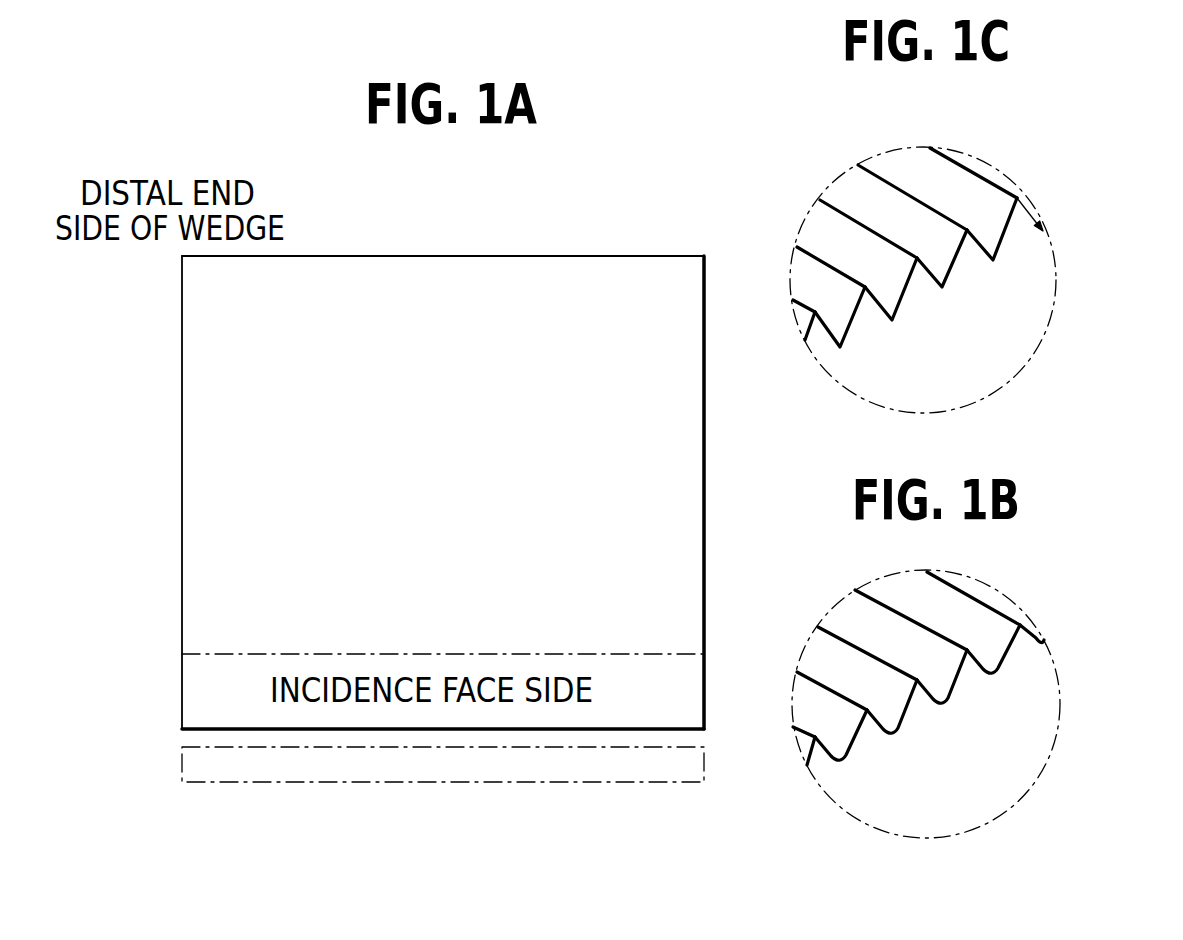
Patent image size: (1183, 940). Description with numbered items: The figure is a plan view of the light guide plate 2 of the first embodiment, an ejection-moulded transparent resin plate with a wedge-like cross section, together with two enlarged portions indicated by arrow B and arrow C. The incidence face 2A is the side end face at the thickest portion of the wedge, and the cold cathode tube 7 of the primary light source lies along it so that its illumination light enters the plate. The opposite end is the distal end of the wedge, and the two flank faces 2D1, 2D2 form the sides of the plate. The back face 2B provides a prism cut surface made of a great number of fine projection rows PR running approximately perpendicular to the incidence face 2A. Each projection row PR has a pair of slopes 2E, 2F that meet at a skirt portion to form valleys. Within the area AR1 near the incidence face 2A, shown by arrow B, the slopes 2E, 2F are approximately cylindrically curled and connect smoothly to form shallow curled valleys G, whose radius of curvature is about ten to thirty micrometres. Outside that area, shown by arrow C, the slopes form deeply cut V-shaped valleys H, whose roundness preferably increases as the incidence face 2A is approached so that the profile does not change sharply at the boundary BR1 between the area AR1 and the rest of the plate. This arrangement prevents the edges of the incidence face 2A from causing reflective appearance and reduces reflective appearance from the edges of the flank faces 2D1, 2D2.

In FIG. 1A, the light guide plate 2 is at (439, 496).
In FIG. 1A, the incidence face 2A is at (184, 729).
In FIG. 1A, the back face 2B is at (403, 287).
In FIG. 1A, the flank face 2D1 is at (182, 458).
In FIG. 1A, the flank face 2D2 is at (706, 463).
In FIG. 1C, the slope 2E is at (857, 187).
In FIG. 1B, the slope 2E is at (860, 617).
In FIG. 1C, the slope 2F is at (978, 230).
In FIG. 1B, the slope 2F is at (980, 652).
In FIG. 1A, the area AR1 is at (207, 690).
In FIG. 1A, the boundary BR1 is at (217, 638).
In FIG. 1A, the cold cathode tube 7 is at (578, 770).
In FIG. 1A, the arrow C is at (497, 354).
In FIG. 1A, the arrow B is at (603, 693).
In FIG. 1C, the projection row PR is at (1040, 222).
In FIG. 1C, the V-shaped valley H is at (936, 259).
In FIG. 1B, the curled valley G is at (940, 667).